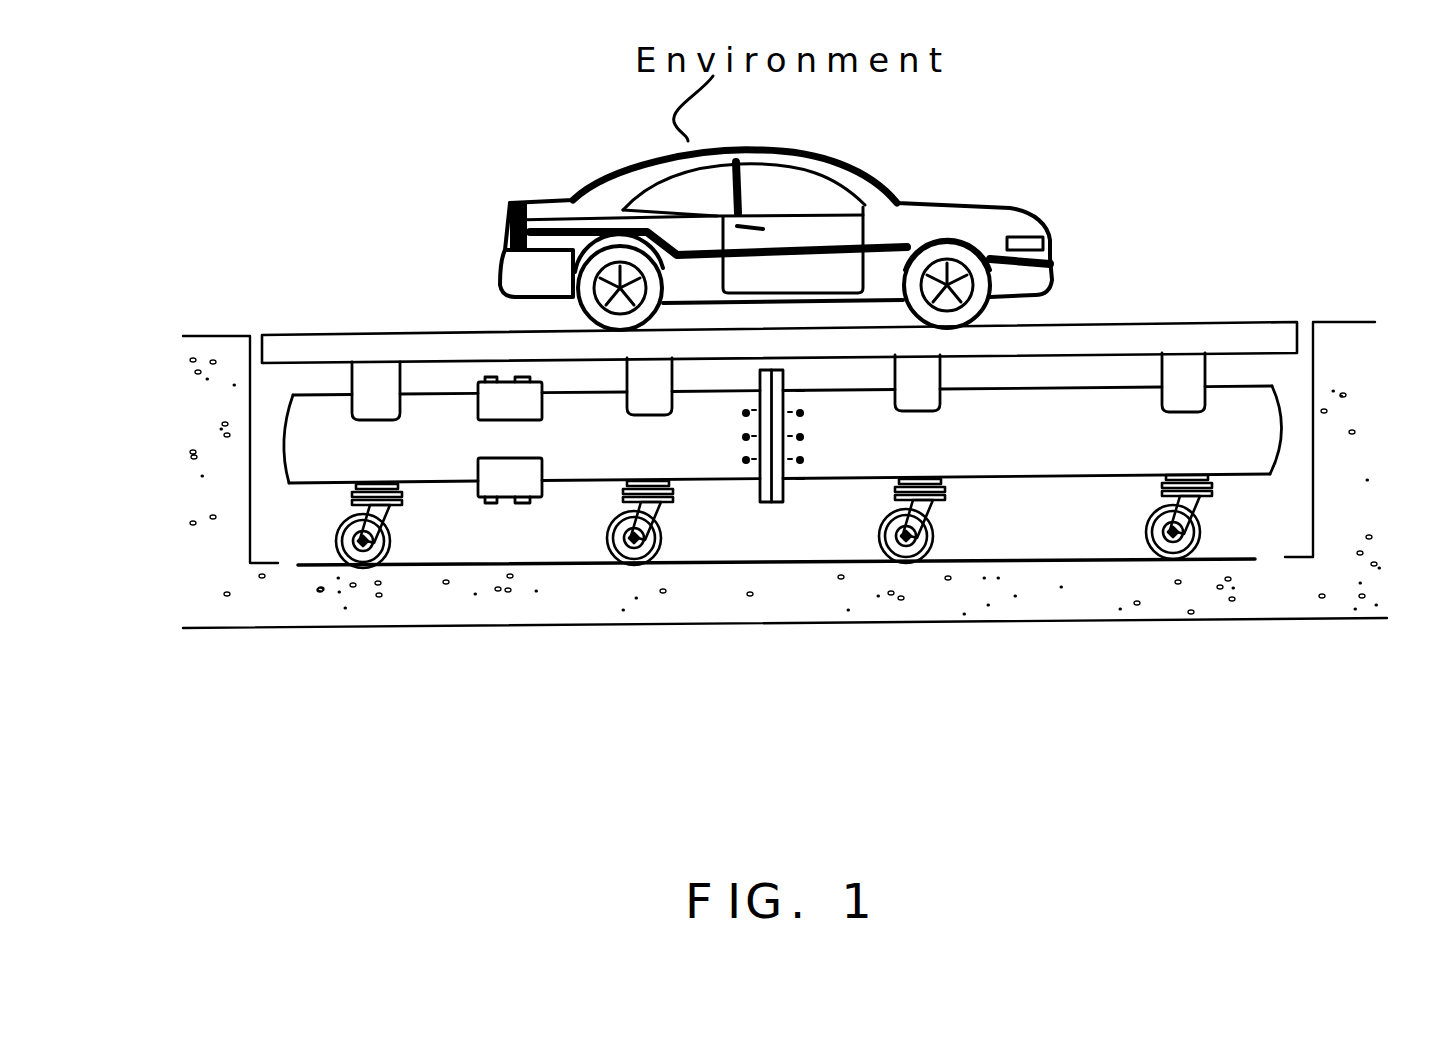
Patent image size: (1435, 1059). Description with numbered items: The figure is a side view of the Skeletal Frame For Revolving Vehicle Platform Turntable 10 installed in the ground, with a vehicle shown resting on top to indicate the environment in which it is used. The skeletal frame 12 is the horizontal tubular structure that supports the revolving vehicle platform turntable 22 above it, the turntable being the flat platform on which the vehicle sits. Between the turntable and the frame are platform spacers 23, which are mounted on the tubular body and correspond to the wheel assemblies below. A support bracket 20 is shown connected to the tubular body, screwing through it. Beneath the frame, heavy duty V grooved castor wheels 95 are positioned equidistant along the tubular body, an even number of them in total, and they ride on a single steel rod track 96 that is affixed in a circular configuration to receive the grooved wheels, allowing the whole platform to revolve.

The Skeletal Frame For Revolving Vehicle Platform Turntable 10 is at (372, 278).
The skeletal frame 12 is at (1285, 427).
The support bracket 20 is at (515, 475).
The revolving vehicle platform turntable 22 is at (275, 335).
The platform spacer 23 is at (627, 380).
The V grooved castor wheel 95 is at (622, 562).
The single steel rod track 96 is at (725, 565).